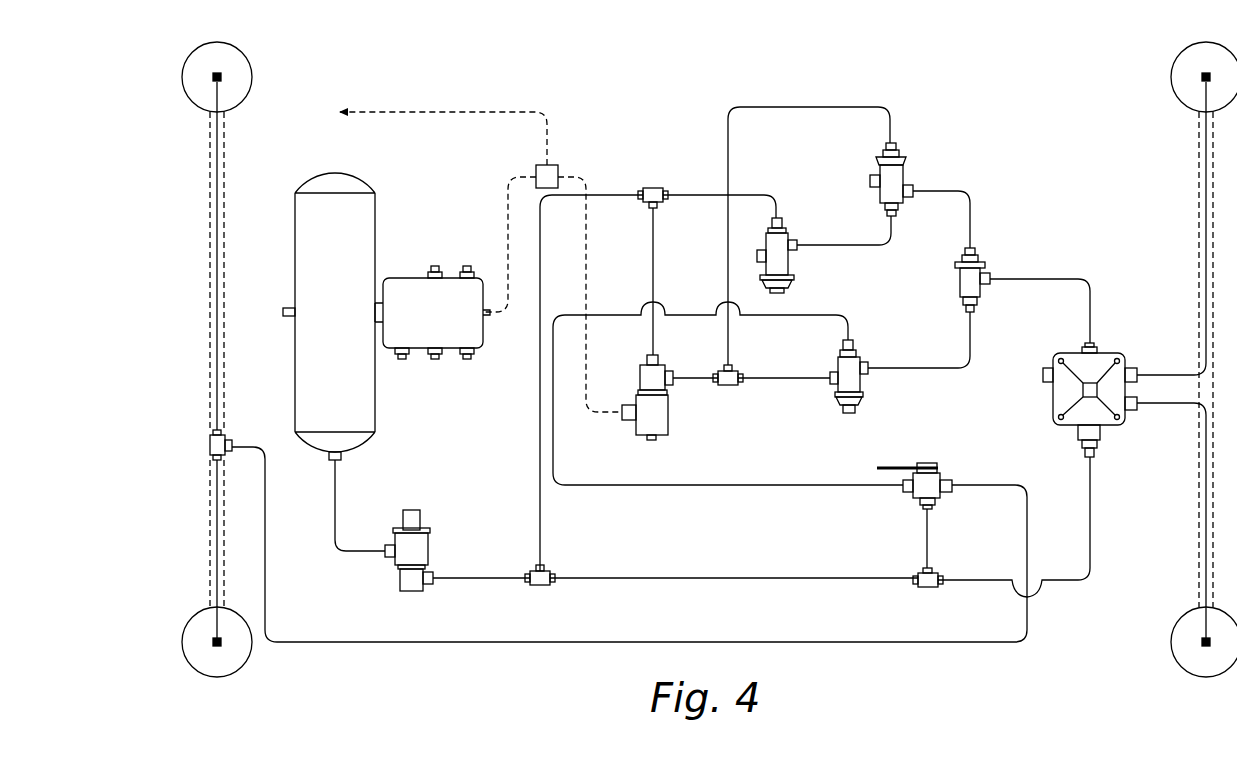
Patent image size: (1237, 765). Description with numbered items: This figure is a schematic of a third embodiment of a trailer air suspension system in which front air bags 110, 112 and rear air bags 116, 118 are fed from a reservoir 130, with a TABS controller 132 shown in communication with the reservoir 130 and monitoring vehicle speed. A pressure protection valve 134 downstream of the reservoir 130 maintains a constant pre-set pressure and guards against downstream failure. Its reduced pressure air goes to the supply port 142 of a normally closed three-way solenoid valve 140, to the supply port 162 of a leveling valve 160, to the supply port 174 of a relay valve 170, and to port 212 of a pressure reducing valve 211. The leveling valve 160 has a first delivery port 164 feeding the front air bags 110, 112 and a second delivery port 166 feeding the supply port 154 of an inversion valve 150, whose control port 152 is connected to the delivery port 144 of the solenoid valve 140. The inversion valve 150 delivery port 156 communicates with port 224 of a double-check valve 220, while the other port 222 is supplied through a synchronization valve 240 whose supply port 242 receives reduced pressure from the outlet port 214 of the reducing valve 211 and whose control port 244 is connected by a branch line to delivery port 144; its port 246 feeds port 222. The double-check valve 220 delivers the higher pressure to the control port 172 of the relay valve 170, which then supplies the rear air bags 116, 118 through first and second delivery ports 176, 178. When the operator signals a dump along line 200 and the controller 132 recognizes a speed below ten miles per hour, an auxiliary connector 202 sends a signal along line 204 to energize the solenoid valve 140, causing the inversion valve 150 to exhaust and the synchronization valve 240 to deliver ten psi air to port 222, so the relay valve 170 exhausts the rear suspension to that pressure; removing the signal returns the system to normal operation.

The front air bag 110 is at (238, 76).
The front air bag 112 is at (230, 660).
The rear air bag 116 is at (1191, 54).
The rear air bag 118 is at (1186, 662).
The reservoir 130 is at (353, 245).
The TABS controller 132 is at (452, 358).
The pressure protection valve 134 is at (440, 548).
The three-way solenoid valve 140 is at (692, 399).
The supply port 142 is at (656, 360).
The delivery port 144 is at (674, 380).
The inversion valve 150 is at (862, 359).
The control port 152 is at (830, 386).
The supply port 154 is at (855, 342).
The delivery port 156 is at (870, 373).
The leveling valve 160 is at (919, 485).
The supply port 162 is at (935, 506).
The first delivery port 164 is at (951, 484).
The second delivery port 166 is at (904, 494).
The relay valve 170 is at (1072, 395).
The control port 172 is at (1098, 345).
The supply port 174 is at (1098, 452).
The first delivery port 176 is at (1137, 368).
The second delivery port 178 is at (1138, 407).
The line 200 is at (410, 112).
The auxiliary connector 202 is at (558, 170).
The line 204 is at (586, 280).
The pressure reducing valve 211 is at (822, 230).
The port 212 is at (784, 221).
The outlet port 214 is at (798, 244).
The double-check valve 220 is at (1028, 273).
The port 222 is at (976, 248).
The port 224 is at (976, 312).
The synchronization valve 240 is at (945, 169).
The supply port 242 is at (897, 213).
The control port 244 is at (897, 145).
The port 246 is at (915, 190).